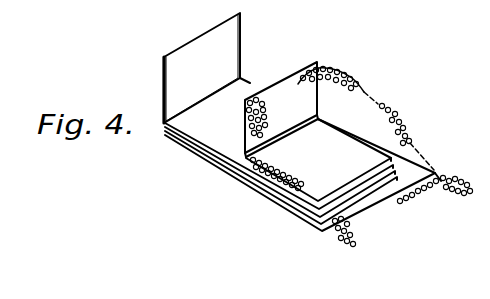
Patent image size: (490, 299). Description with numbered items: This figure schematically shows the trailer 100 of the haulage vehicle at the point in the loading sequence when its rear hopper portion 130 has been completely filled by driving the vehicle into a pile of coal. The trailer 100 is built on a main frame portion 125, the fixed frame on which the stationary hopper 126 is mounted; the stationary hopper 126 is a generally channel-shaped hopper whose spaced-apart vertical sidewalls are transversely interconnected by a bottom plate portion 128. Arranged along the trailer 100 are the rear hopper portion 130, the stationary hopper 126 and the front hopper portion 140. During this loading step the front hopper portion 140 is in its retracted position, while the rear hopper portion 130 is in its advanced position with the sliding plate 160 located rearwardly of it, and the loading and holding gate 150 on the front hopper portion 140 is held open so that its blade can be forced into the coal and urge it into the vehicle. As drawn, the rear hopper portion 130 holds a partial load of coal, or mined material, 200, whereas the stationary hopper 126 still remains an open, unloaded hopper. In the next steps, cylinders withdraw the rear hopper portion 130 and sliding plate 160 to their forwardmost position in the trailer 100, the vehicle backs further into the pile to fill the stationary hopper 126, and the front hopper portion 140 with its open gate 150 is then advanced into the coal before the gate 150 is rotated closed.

The trailer 100 is at (294, 48).
The fixed frame 125 is at (163, 87).
The bottom plate portion 128 is at (227, 119).
The stationary hopper 126 is at (246, 139).
The sliding plate 160 is at (224, 163).
The front hopper portion 140 is at (253, 184).
The rear hopper portion 130 is at (285, 195).
The loading and holding gate 150 is at (338, 234).
The mined material 200 is at (362, 96).